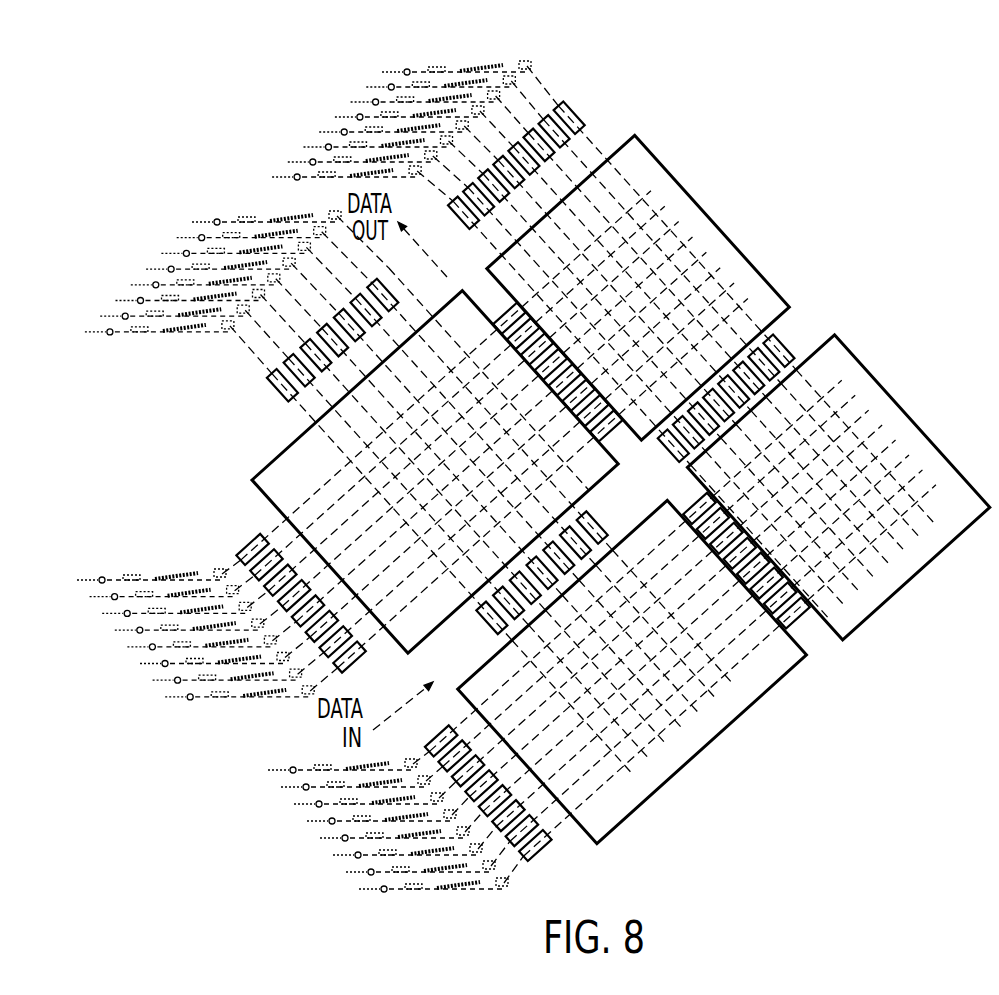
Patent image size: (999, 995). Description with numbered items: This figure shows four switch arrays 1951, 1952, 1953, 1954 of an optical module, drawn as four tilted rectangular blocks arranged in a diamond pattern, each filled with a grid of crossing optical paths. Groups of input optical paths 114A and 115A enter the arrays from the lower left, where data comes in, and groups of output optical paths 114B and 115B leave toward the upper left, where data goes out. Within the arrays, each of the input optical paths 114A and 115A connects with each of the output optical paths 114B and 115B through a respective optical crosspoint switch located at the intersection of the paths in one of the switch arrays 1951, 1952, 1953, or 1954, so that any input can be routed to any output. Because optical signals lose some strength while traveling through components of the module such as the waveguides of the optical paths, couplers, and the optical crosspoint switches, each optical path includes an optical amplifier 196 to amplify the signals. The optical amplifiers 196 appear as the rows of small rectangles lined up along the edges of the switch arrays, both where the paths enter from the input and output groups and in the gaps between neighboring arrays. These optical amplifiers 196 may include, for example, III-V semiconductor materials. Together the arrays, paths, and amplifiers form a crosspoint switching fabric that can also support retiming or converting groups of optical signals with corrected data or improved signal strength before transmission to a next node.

The switch array 1951 is at (252, 482).
The switch array 1952 is at (650, 147).
The switch array 1953 is at (618, 833).
The switch array 1954 is at (862, 628).
The optical amplifier 196 is at (268, 390).
The input optical path 114A is at (137, 713).
The output optical path 114B is at (151, 202).
The input optical path 115A is at (327, 901).
The output optical path 115B is at (352, 43).